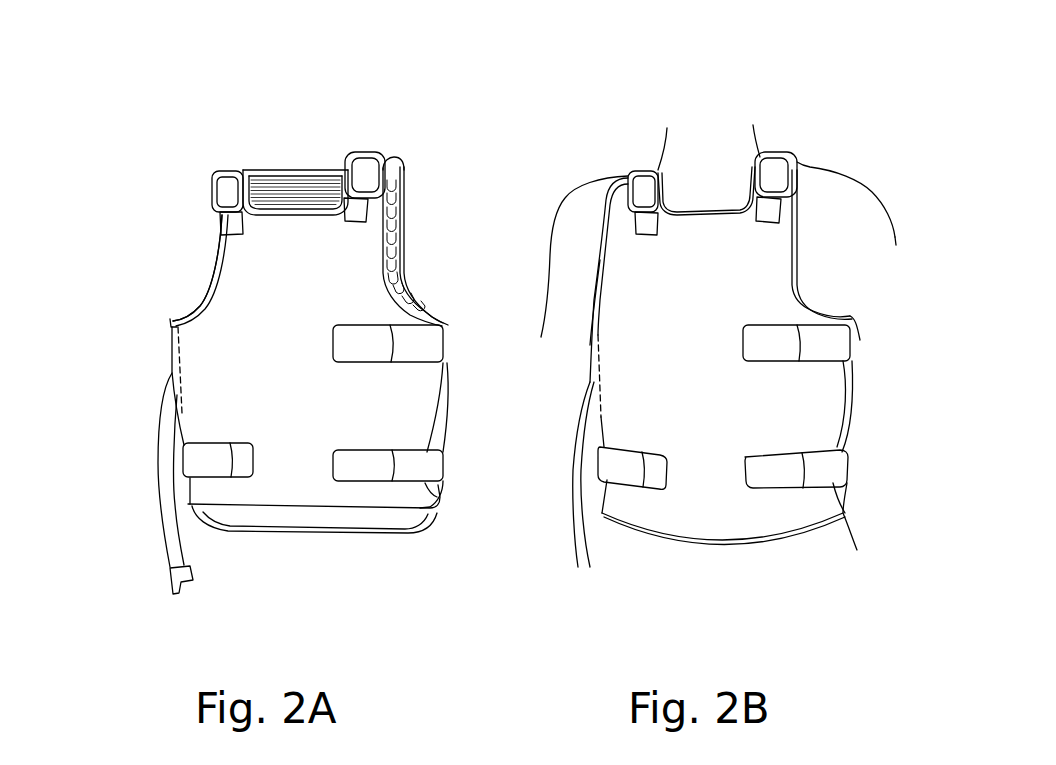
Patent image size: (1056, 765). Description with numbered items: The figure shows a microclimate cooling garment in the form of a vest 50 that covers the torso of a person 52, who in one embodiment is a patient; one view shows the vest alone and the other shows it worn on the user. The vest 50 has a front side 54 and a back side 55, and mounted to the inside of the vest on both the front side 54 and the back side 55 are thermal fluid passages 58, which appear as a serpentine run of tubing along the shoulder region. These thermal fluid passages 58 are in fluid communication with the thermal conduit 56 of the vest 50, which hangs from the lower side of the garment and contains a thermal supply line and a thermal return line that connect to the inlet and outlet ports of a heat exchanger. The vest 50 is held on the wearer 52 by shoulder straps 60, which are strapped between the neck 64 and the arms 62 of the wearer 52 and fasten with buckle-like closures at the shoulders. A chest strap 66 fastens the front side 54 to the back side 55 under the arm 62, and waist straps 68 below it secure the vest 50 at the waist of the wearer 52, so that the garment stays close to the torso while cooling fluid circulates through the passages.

In FIG. 2A, the vest 50 is at (178, 148).
In FIG. 2B, the vest 50 is at (758, 597).
In FIG. 2B, the person 52 is at (880, 270).
In FIG. 2A, the front side 54 is at (233, 283).
In FIG. 2B, the front side 54 is at (653, 317).
In FIG. 2A, the back side 55 is at (380, 537).
In FIG. 2A, the thermal conduit 56 is at (163, 525).
In FIG. 2B, the thermal conduit 56 is at (573, 520).
In FIG. 2A, the thermal fluid passages 58 is at (408, 280).
In FIG. 2A, the shoulder straps 60 is at (375, 157).
In FIG. 2B, the shoulder straps 60 is at (647, 170).
In FIG. 2B, the arms 62 is at (578, 195).
In FIG. 2B, the neck 64 is at (750, 140).
In FIG. 2A, the chest strap 66 is at (440, 343).
In FIG. 2B, the chest strap 66 is at (843, 350).
In FIG. 2A, the waist straps 68 is at (198, 460).
In FIG. 2B, the waist straps 68 is at (840, 463).